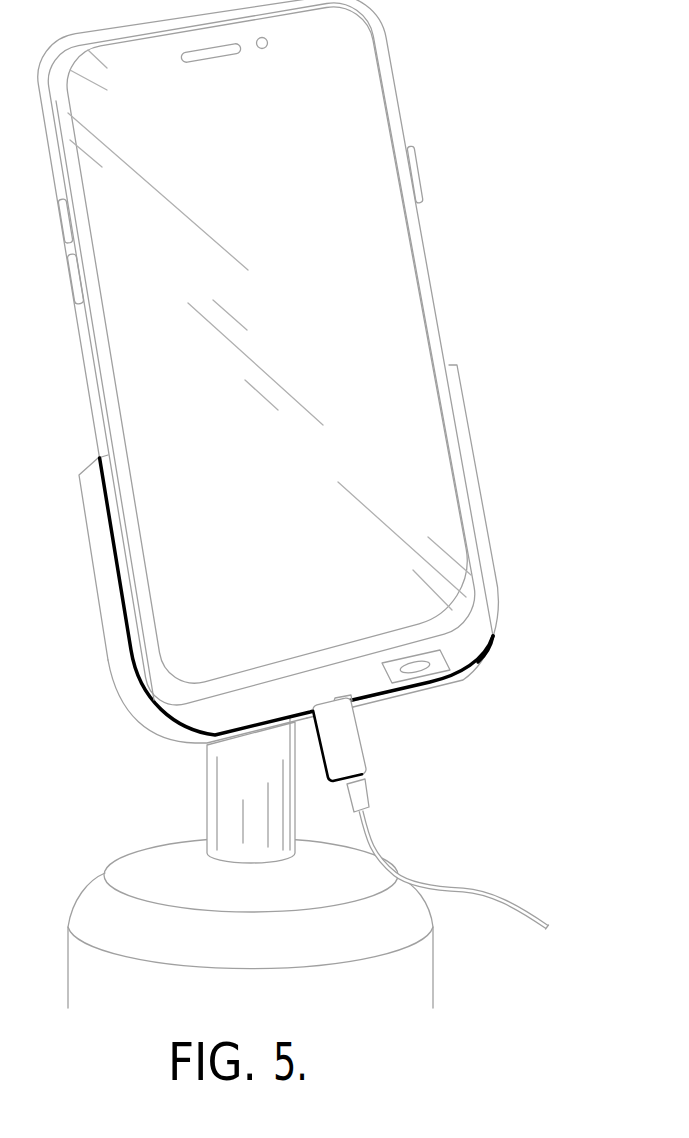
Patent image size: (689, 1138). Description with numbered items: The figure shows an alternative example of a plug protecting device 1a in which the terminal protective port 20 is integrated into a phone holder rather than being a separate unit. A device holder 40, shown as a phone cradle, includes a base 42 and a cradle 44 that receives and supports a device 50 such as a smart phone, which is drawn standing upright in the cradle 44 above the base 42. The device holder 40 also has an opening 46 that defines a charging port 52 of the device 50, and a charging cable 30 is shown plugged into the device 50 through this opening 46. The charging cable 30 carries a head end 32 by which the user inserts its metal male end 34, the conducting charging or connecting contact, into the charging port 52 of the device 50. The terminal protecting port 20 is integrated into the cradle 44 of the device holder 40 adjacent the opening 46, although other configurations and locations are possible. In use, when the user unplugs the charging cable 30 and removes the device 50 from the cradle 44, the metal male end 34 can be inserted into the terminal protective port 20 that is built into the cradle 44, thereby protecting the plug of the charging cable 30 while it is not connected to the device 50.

The plug protecting device 1a is at (493, 634).
The terminal protective port 20 is at (450, 685).
The charging cable 30 is at (498, 897).
The head end 32 is at (358, 763).
The metal male end 34 is at (334, 712).
The device holder 40 is at (184, 755).
The base 42 is at (143, 865).
The cradle 44 is at (113, 630).
The opening 46 is at (353, 730).
The device 50 is at (365, 110).
The charging port 52 is at (311, 705).